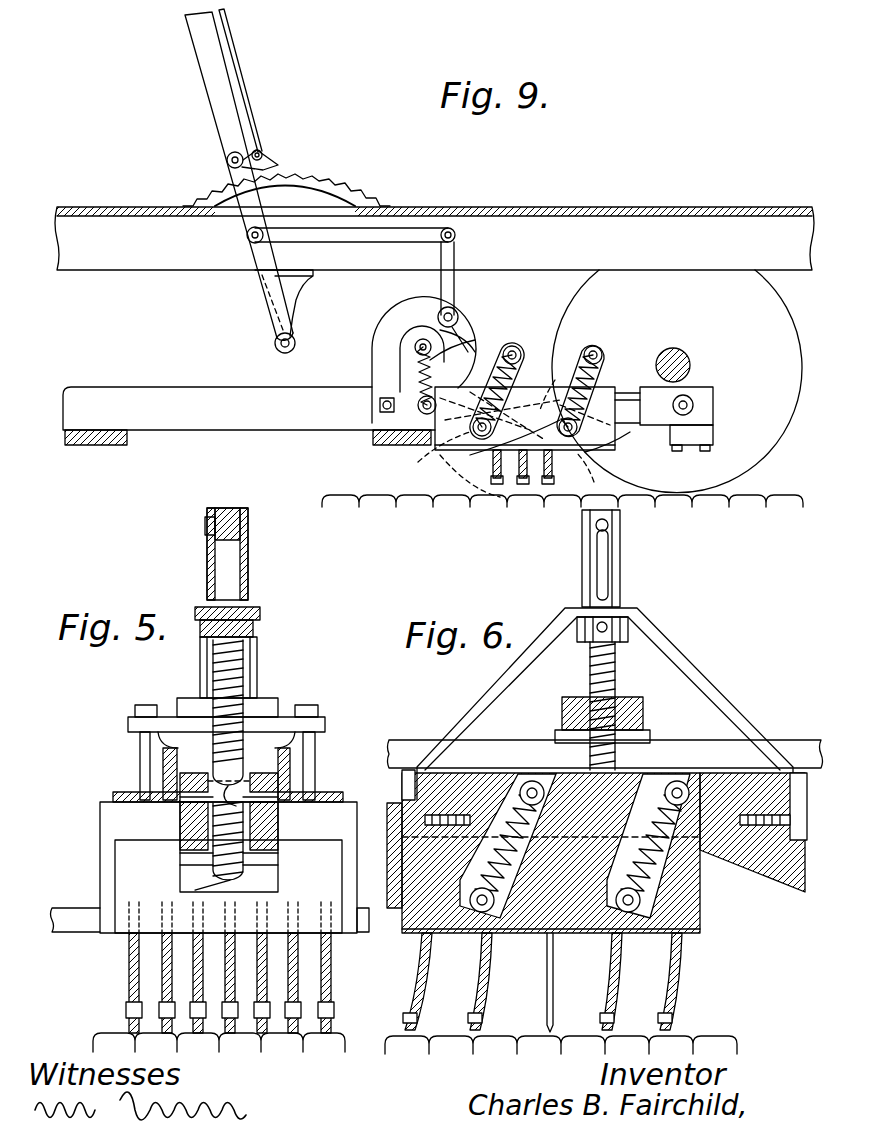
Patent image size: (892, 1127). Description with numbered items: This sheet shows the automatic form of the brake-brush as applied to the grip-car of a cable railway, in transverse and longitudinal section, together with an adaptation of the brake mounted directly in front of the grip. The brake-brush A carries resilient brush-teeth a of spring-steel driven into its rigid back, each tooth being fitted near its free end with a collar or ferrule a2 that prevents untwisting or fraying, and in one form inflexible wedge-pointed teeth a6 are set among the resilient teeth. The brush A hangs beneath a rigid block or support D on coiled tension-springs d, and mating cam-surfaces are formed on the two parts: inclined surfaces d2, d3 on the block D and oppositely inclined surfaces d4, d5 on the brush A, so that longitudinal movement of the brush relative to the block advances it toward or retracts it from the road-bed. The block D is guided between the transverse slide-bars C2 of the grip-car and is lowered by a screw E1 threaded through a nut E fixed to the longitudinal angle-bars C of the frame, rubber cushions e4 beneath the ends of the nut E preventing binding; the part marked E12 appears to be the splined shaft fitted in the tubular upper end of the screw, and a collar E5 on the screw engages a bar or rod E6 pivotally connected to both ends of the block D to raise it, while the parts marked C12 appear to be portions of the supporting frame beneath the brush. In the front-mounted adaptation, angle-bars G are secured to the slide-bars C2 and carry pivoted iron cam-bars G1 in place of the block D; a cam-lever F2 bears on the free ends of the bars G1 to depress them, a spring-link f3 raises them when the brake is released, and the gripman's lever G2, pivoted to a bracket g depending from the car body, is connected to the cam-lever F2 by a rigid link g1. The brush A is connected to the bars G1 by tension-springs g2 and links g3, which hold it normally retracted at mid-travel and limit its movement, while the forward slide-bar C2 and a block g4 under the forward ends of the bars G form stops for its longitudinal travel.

In FIG. 9, the lever G2 is at (228, 112).
In FIG. 9, the rigid link g1 is at (375, 240).
In FIG. 9, the bracket g is at (292, 292).
In FIG. 9, the cam-lever F2 is at (465, 332).
In FIG. 9, the spring-link f3 is at (405, 365).
In FIG. 9, the angle-bars G is at (208, 398).
In FIG. 9, the slide-bars C2 is at (93, 445).
In FIG. 9, the brake-brush A is at (525, 418).
In FIG. 5, the brake-brush A is at (125, 860).
In FIG. 9, the tension-springs g2 is at (522, 355).
In FIG. 9, the cam-bars G1 is at (636, 388).
In FIG. 9, the block g4 is at (700, 436).
In FIG. 9, the inclined surface d2 is at (638, 446).
In FIG. 5, the inclined surface d2 is at (256, 877).
In FIG. 6, the inclined surface d2 is at (700, 915).
In FIG. 9, the inclined surface d3 is at (437, 458).
In FIG. 5, the inclined surface d3 is at (185, 845).
In FIG. 6, the inclined surface d3 is at (384, 866).
In FIG. 9, the links g3 is at (478, 452).
In FIG. 9, the brush-teeth a is at (552, 476).
In FIG. 5, the brush-teeth a is at (165, 985).
In FIG. 9, the inclined surface d5 is at (597, 475).
In FIG. 6, the inclined surface d5 is at (427, 940).
In FIG. 9, the inclined surface d4 is at (487, 505).
In FIG. 5, the inclined surface d4 is at (195, 890).
In FIG. 6, the inclined surface d4 is at (579, 846).
In FIG. 5, the adjusting screw rod E12 is at (237, 522).
In FIG. 5, the collar E5 is at (256, 628).
In FIG. 6, the collar E5 is at (629, 631).
In FIG. 5, the bar or rod E6 is at (256, 662).
In FIG. 6, the bar or rod E6 is at (668, 650).
In FIG. 5, the screw E1 is at (263, 700).
In FIG. 6, the screw E1 is at (618, 668).
In FIG. 5, the rubber cushions e4 is at (300, 712).
In FIG. 6, the rubber cushions e4 is at (632, 744).
In FIG. 5, the angle-bars C is at (288, 752).
In FIG. 6, the angle-bars C is at (415, 748).
In FIG. 5, the block or support D is at (286, 800).
In FIG. 6, the block or support D is at (472, 800).
In FIG. 5, the coiled tension-springs d is at (208, 877).
In FIG. 6, the coiled tension-springs d is at (528, 785).
In FIG. 5, the side plate C12 is at (100, 890).
In FIG. 5, the collars or ferrules a2 is at (123, 938).
In FIG. 6, the nut E is at (575, 697).
In FIG. 6, the inflexible teeth a6 is at (553, 1022).